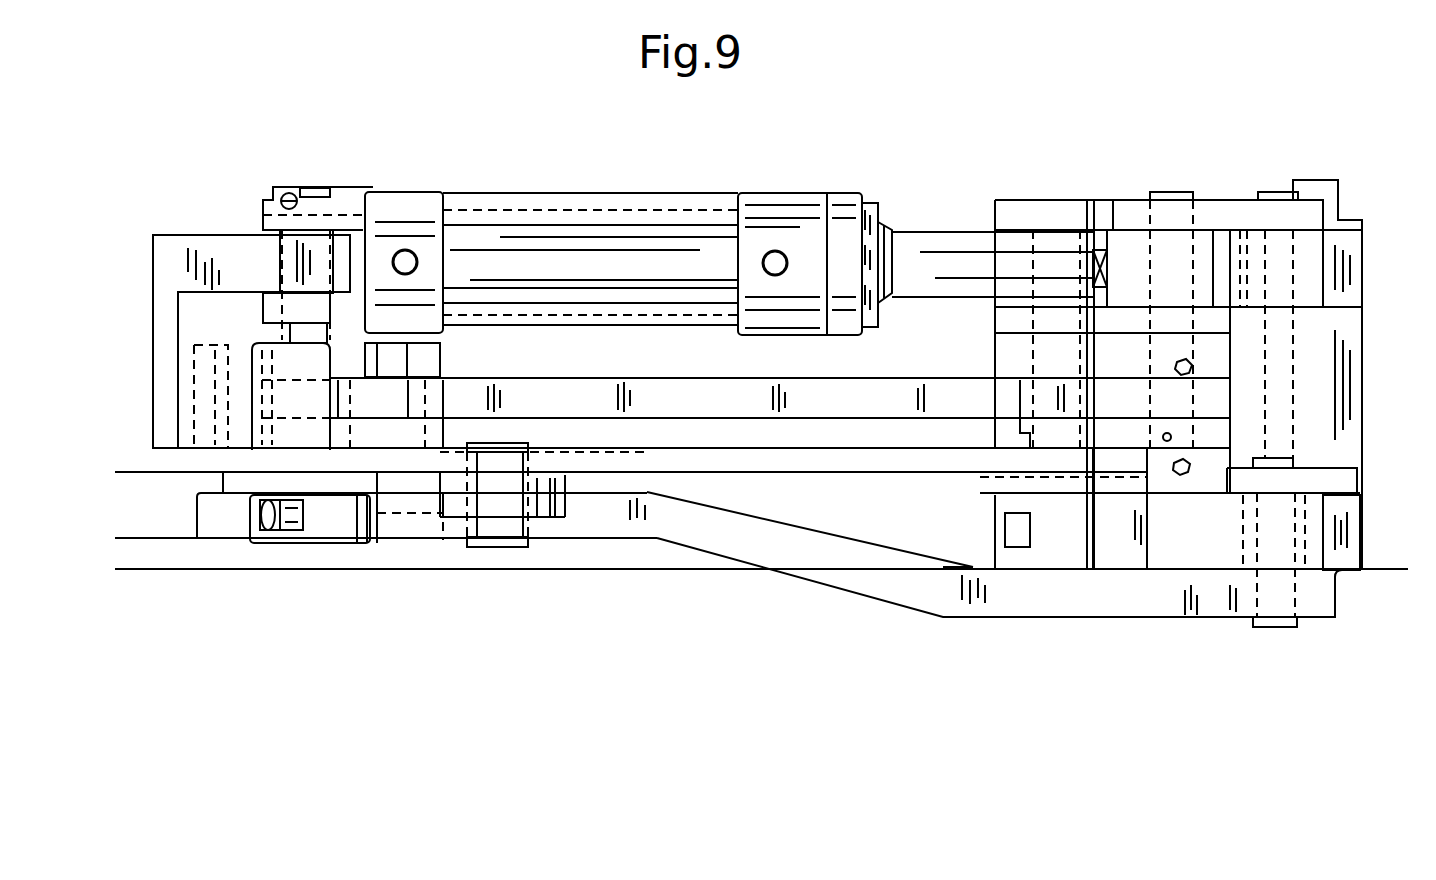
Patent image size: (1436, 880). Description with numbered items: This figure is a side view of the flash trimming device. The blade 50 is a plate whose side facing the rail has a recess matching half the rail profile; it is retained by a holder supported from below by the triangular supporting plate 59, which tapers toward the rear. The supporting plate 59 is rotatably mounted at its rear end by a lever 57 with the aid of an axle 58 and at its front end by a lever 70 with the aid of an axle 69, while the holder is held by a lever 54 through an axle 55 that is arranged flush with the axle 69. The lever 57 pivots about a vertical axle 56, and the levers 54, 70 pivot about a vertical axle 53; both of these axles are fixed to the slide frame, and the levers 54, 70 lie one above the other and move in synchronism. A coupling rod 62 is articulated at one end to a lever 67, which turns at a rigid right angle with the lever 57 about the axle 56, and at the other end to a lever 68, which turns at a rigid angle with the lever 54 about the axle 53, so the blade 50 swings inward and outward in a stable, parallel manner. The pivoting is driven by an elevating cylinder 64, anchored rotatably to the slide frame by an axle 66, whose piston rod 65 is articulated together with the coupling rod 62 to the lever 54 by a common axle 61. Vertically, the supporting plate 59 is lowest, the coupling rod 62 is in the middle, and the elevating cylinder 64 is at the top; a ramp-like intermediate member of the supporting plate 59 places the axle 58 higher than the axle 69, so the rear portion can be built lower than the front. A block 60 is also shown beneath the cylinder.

The blade 50 is at (1322, 185).
The axle 53 is at (1092, 197).
The lever 54 is at (1316, 217).
The axle 55 is at (1270, 192).
The axle 56 is at (305, 548).
The lever 57 is at (378, 525).
The axle 58 is at (500, 550).
The supporting plate 59 is at (716, 528).
The support block 60 is at (388, 340).
The axle 61 is at (1172, 192).
The coupling rod 62 is at (858, 405).
The elevating cylinder 64 is at (513, 245).
The piston rod 65 is at (948, 250).
The axle 66 is at (308, 188).
The lever 67 is at (210, 358).
The lever 68 is at (1132, 462).
The axle 69 is at (1280, 627).
The lever 70 is at (1332, 505).